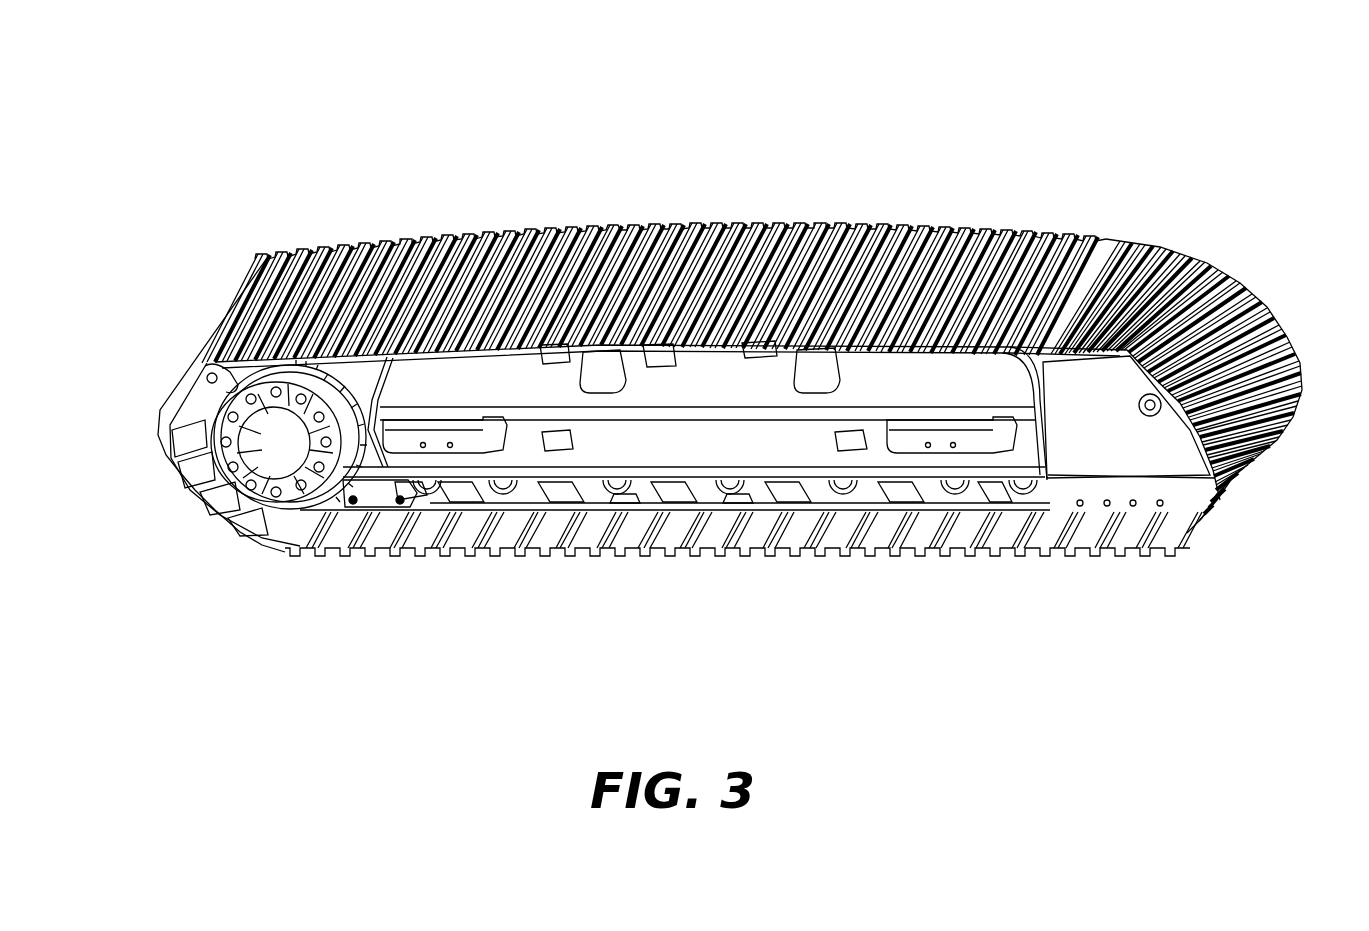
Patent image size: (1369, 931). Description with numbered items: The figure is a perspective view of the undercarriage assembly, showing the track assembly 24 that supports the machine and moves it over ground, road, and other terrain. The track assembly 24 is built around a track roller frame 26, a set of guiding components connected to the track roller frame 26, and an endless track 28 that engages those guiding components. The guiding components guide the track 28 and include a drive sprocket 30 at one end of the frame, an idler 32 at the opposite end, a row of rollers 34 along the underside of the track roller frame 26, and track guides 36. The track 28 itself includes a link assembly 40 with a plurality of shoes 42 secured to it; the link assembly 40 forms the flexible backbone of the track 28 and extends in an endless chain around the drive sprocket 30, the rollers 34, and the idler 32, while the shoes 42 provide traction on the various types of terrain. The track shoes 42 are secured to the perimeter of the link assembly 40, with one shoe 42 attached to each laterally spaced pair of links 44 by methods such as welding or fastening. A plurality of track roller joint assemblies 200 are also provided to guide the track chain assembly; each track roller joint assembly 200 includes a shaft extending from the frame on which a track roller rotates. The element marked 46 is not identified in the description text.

The track assembly 24 is at (1152, 108).
The track roller frame 26 is at (700, 445).
The endless track 28 is at (1125, 237).
The drive sprocket 30 is at (276, 442).
The idler 32 is at (1185, 440).
The rollers 34 is at (427, 503).
The track guides 36 is at (560, 490).
The link assembly 40 is at (312, 500).
The track shoes 42 is at (190, 407).
The links 44 is at (377, 502).
The bracket 46 is at (417, 490).
The track roller joint assembly 200 is at (627, 493).